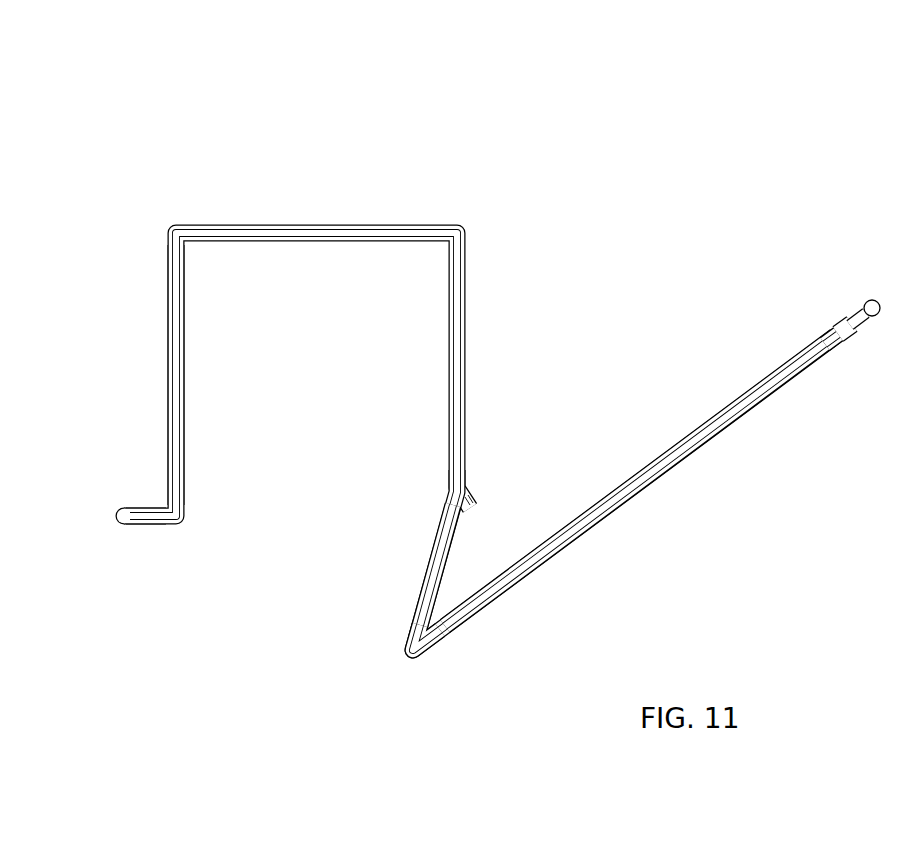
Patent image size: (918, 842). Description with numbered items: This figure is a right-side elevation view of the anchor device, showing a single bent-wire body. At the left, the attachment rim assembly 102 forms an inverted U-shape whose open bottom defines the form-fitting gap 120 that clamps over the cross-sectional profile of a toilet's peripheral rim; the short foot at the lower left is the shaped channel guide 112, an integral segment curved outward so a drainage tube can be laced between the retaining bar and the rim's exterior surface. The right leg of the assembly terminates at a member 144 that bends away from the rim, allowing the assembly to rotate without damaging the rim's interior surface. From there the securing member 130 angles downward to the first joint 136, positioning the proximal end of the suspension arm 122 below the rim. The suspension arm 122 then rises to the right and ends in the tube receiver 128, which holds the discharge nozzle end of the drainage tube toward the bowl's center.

The attachment rim assembly 102 is at (256, 198).
The shaped channel guide 112 is at (133, 535).
The form-fitting gap 120 is at (263, 533).
The suspension arm 122 is at (660, 479).
The tube receiver 128 is at (820, 314).
The securing member 130 is at (428, 575).
The first joint 136 is at (403, 658).
The member 144 is at (470, 497).